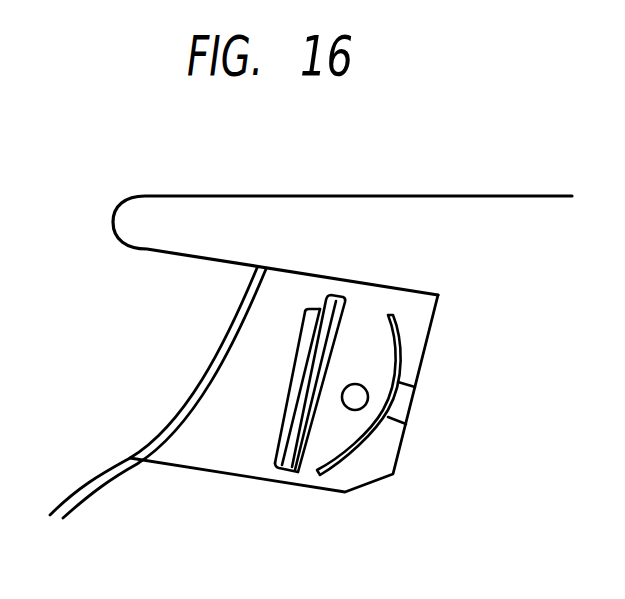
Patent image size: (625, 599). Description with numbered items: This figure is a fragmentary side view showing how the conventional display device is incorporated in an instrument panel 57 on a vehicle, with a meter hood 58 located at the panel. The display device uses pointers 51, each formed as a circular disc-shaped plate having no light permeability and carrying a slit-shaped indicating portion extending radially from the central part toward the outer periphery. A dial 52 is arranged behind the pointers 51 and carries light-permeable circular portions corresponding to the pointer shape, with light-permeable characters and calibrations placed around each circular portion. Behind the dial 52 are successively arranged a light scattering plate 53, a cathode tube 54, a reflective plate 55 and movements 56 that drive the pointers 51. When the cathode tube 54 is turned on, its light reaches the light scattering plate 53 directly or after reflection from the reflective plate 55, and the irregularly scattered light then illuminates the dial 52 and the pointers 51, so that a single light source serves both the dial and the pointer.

The pointer 51 is at (278, 414).
The dial 52 is at (283, 467).
The light scattering plate 53 is at (295, 472).
The cathode tube 54 is at (356, 403).
The reflective plate 55 is at (398, 354).
The movement 56 is at (412, 403).
The instrument panel 57 is at (435, 218).
The meter hood 58 is at (166, 428).